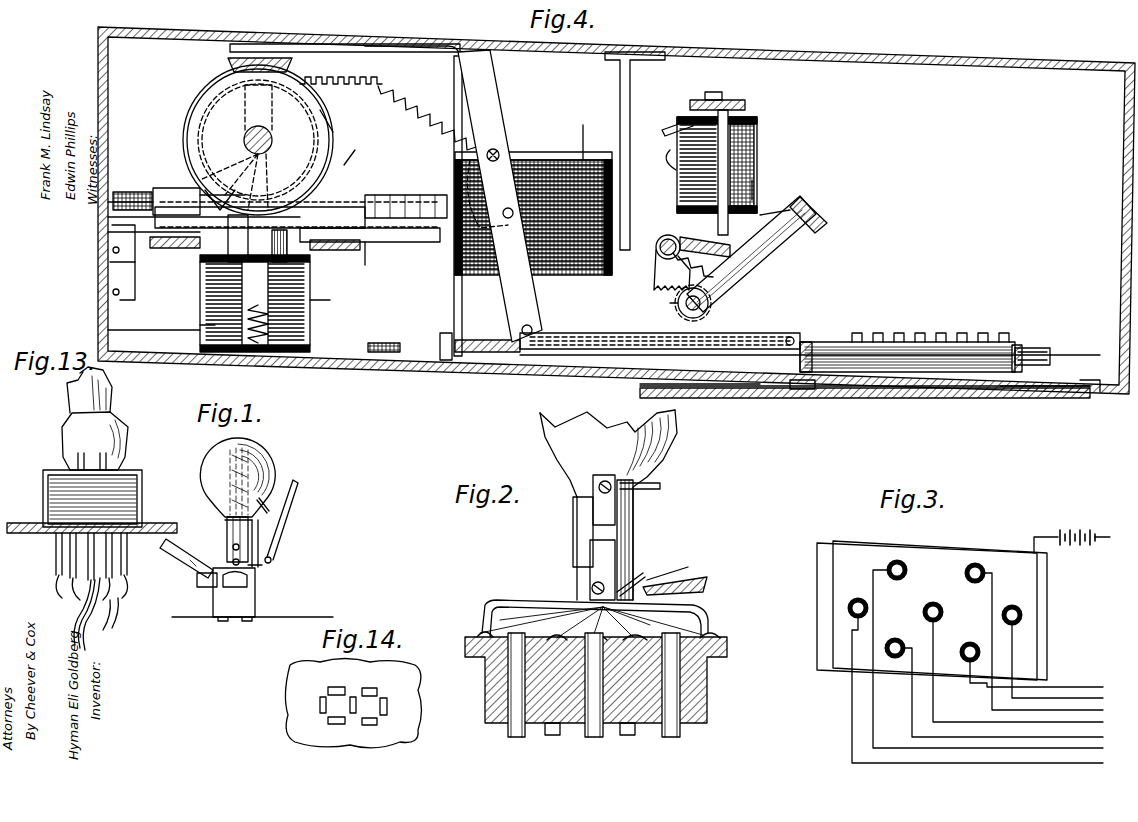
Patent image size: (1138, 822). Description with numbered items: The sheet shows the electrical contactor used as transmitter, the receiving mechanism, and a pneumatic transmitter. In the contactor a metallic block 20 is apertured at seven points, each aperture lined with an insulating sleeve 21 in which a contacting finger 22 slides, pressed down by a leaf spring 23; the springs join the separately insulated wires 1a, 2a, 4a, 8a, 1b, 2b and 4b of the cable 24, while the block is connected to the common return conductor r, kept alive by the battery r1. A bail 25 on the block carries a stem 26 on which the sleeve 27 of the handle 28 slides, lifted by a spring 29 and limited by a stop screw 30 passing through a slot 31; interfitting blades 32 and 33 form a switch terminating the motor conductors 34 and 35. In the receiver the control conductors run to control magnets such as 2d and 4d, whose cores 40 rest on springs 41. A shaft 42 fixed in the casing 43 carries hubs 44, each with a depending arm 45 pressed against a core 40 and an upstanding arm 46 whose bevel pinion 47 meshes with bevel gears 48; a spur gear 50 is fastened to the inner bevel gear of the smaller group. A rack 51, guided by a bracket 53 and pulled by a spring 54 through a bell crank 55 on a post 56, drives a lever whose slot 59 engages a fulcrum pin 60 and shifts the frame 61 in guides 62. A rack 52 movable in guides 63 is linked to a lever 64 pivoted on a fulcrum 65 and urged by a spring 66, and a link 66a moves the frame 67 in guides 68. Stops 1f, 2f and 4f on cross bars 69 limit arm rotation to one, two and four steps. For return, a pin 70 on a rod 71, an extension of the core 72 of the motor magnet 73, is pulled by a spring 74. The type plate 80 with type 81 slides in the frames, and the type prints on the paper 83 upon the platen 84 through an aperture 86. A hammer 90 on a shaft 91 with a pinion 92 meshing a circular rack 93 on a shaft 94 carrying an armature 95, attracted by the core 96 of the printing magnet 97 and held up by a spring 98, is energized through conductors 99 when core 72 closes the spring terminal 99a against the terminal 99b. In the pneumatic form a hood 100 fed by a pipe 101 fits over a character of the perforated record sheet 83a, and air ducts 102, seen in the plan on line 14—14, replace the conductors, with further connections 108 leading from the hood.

In FIG. 4, the shaft 42 is at (793, 50).
In FIG. 4, the spur gear 50 is at (190, 105).
In FIG. 4, the arm 46 is at (252, 128).
In FIG. 4, the hub 44 is at (244, 140).
In FIG. 4, the bevel gears 48 is at (334, 131).
In FIG. 4, the bevel pinion 47 is at (228, 62).
In FIG. 4, the guides 63 is at (270, 44).
In FIG. 4, the rack 52 is at (345, 84).
In FIG. 4, the spring 66 is at (418, 114).
In FIG. 4, the stop 4f is at (356, 150).
In FIG. 4, the spring 74 is at (135, 192).
In FIG. 4, the pin 70 is at (178, 192).
In FIG. 4, the stop 2f is at (108, 207).
In FIG. 4, the control conductor 4b is at (108, 262).
In FIG. 3, the control conductor 4b is at (991, 699).
In FIG. 4, the common return conductor r is at (108, 329).
In FIG. 4, the stationary bracket 53 is at (132, 268).
In FIG. 4, the stationary cross bars 69 is at (178, 248).
In FIG. 4, the arm 45 is at (230, 260).
In FIG. 4, the cores 40 is at (312, 262).
In FIG. 4, the springs 41 is at (270, 327).
In FIG. 4, the control magnet 2d is at (200, 325).
In FIG. 4, the control magnet 4d is at (329, 298).
In FIG. 4, the rod 71 is at (340, 207).
In FIG. 4, the core 72 is at (396, 195).
In FIG. 4, the rack 51 is at (396, 241).
In FIG. 4, the stop 1f is at (366, 266).
In FIG. 4, the post 56 is at (454, 280).
In FIG. 4, the stationary fulcrum 65 is at (480, 64).
In FIG. 4, the lever 64 is at (497, 112).
In FIG. 4, the stationary fulcrum pin 60 is at (381, 343).
In FIG. 4, the slot 59 is at (444, 340).
In FIG. 4, the spring 54 is at (484, 340).
In FIG. 4, the bell crank 55 is at (505, 300).
In FIG. 4, the motor magnet 73 is at (582, 276).
In FIG. 4, the motor conductor 35 is at (622, 112).
In FIG. 1, the motor conductor 35 is at (270, 510).
In FIG. 2, the motor conductor 35 is at (690, 566).
In FIG. 4, the motor conductor 34 is at (583, 125).
In FIG. 1, the motor conductor 34 is at (297, 480).
In FIG. 2, the motor conductor 34 is at (662, 486).
In FIG. 4, the printing magnet 97 is at (757, 136).
In FIG. 4, the conductors 99 is at (672, 128).
In FIG. 4, the spring terminal 99a is at (676, 170).
In FIG. 4, the terminal 99b is at (752, 185).
In FIG. 4, the core 96 is at (690, 240).
In FIG. 4, the armature 95 is at (765, 215).
In FIG. 4, the shaft 94 is at (660, 240).
In FIG. 4, the circular rack 93 is at (655, 262).
In FIG. 4, the shaft 91 is at (710, 308).
In FIG. 4, the pinion 92 is at (678, 308).
In FIG. 4, the spring 98 is at (720, 280).
In FIG. 4, the hammer 90 is at (770, 236).
In FIG. 4, the link 66a is at (620, 334).
In FIG. 4, the stationary guides 68 is at (788, 336).
In FIG. 4, the type plate 80 is at (848, 345).
In FIG. 4, the type 81 is at (918, 333).
In FIG. 4, the frame 67 is at (806, 342).
In FIG. 4, the platen 84 is at (908, 398).
In FIG. 4, the aperture 86 is at (805, 390).
In FIG. 4, the receiving sheet 83 is at (842, 388).
In FIG. 4, the casing 43 is at (760, 390).
In FIG. 4, the frame 61 is at (995, 392).
In FIG. 4, the stationary guides 62 is at (598, 372).
In FIG. 13, the pipe 101 is at (110, 392).
In FIG. 13, the record sheet 83a is at (60, 456).
In FIG. 14, the record sheet 83a is at (290, 690).
In FIG. 13, the hood 100 is at (130, 476).
In FIG. 13, the section line 14 is at (22, 512).
In FIG. 13, the wires 108 is at (108, 596).
In FIG. 1, the handle 28 is at (270, 462).
In FIG. 2, the handle 28 is at (548, 440).
In FIG. 1, the spring 29 is at (232, 450).
In FIG. 1, the stop screw 30 is at (227, 530).
In FIG. 2, the stop screw 30 is at (573, 550).
In FIG. 1, the slot 31 is at (225, 518).
In FIG. 1, the stem 26 is at (230, 560).
In FIG. 2, the stem 26 is at (590, 575).
In FIG. 1, the metallic block 20 is at (256, 600).
In FIG. 2, the metallic block 20 is at (485, 684).
In FIG. 3, the metallic block 20 is at (855, 548).
In FIG. 1, the switch blade 33 is at (260, 552).
In FIG. 2, the switch blade 33 is at (644, 572).
In FIG. 1, the switch blade 32 is at (262, 540).
In FIG. 2, the switch blade 32 is at (593, 512).
In FIG. 1, the cable 24 is at (190, 572).
In FIG. 2, the cable 24 is at (707, 578).
In FIG. 14, the air-carrying ducts 102 is at (368, 688).
In FIG. 2, the sleeve 27 is at (633, 528).
In FIG. 2, the bail 25 is at (540, 604).
In FIG. 2, the leaf springs 23 is at (490, 615).
In FIG. 2, the insulating sleeve 21 is at (505, 690).
In FIG. 3, the insulating sleeve 21 is at (966, 568).
In FIG. 2, the contacting fingers 22 is at (519, 737).
In FIG. 3, the contacting fingers 22 is at (966, 580).
In FIG. 3, the battery r1 is at (1104, 535).
In FIG. 3, the control conductor 1a is at (1049, 678).
In FIG. 3, the control conductor 2a is at (1070, 666).
In FIG. 3, the control conductor 4a is at (1057, 648).
In FIG. 3, the control conductor 8a is at (1031, 679).
In FIG. 3, the control conductor 1b is at (1017, 699).
In FIG. 3, the control conductor 2b is at (1001, 667).